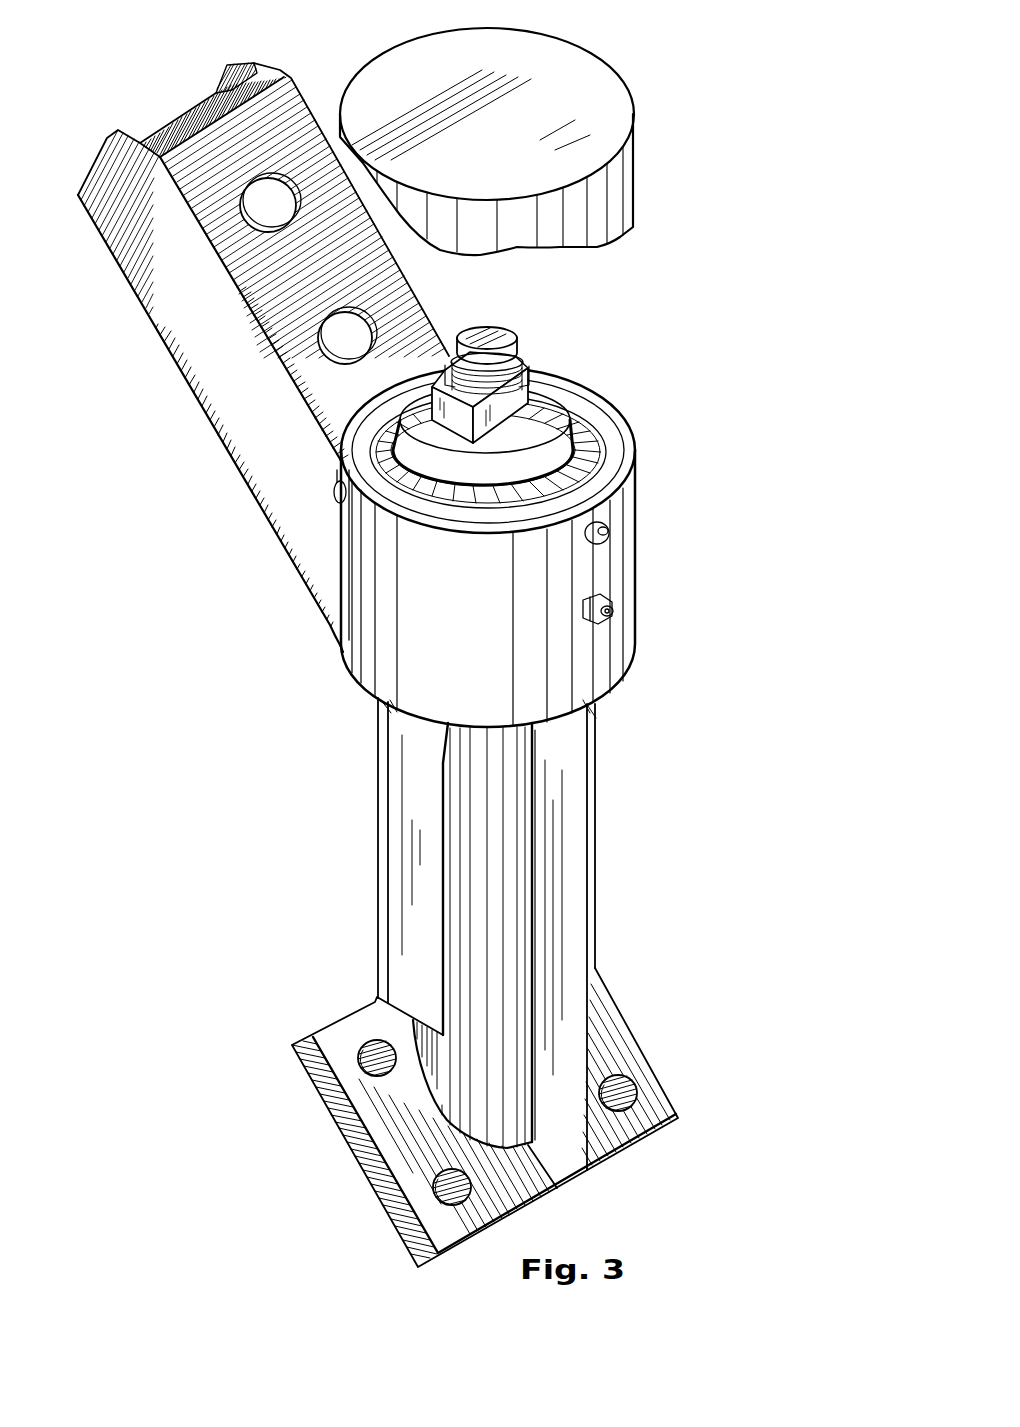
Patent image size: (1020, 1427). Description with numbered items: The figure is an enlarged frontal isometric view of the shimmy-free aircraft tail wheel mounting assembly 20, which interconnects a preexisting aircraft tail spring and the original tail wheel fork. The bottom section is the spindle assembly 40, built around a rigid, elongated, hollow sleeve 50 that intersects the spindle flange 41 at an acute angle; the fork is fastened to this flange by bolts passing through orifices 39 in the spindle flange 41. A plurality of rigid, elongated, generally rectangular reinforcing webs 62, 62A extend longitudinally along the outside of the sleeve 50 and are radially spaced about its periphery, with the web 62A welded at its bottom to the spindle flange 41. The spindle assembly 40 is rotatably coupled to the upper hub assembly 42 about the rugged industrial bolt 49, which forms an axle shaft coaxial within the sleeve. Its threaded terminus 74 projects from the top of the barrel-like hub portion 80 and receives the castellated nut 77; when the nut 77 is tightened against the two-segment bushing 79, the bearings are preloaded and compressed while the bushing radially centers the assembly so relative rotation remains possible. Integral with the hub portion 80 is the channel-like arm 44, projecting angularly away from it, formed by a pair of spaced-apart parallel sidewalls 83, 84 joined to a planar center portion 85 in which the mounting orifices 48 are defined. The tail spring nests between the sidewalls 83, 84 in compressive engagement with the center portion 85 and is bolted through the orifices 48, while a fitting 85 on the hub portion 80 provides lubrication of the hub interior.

The shimmy-free aircraft tail wheel mounting assembly 20 is at (758, 538).
The orifices 39 is at (368, 1050).
The spindle assembly 40 is at (337, 807).
The spindle flange 41 is at (632, 1053).
The hub assembly 42 is at (288, 644).
The channel-like arm 44 is at (157, 229).
The orifices 48 is at (333, 350).
The industrial bolt 49 is at (512, 328).
The sleeve 50 is at (498, 832).
The reinforcing webs 62 is at (400, 906).
The reinforcing web 62A is at (550, 880).
The threaded terminus 74 is at (521, 355).
The castellated nut 77 is at (527, 410).
The two-segment bushing 79 is at (553, 428).
The hub portion 80 is at (615, 648).
The sidewall 83 is at (210, 86).
The sidewall 84 is at (241, 427).
The center portion 85 is at (152, 137).